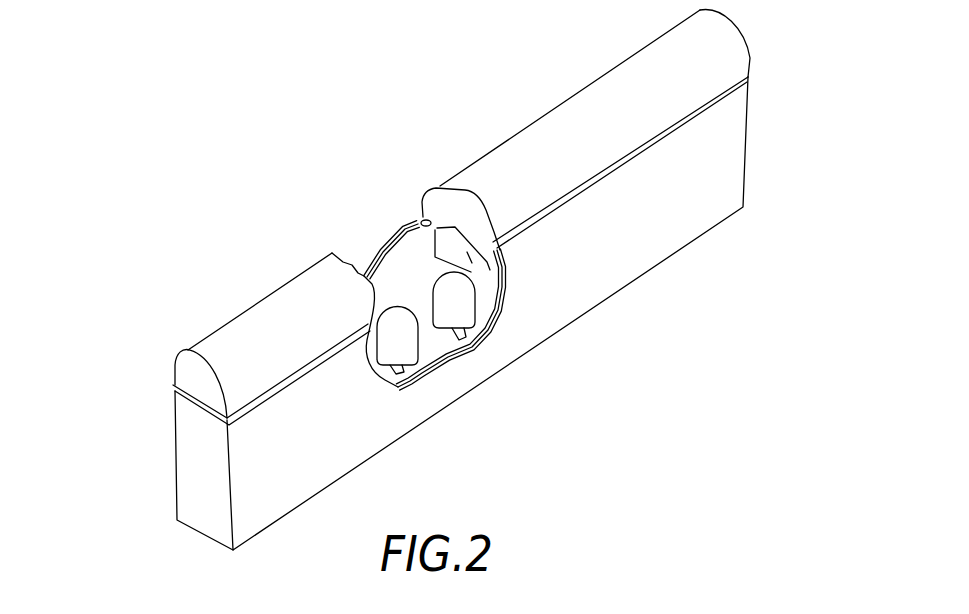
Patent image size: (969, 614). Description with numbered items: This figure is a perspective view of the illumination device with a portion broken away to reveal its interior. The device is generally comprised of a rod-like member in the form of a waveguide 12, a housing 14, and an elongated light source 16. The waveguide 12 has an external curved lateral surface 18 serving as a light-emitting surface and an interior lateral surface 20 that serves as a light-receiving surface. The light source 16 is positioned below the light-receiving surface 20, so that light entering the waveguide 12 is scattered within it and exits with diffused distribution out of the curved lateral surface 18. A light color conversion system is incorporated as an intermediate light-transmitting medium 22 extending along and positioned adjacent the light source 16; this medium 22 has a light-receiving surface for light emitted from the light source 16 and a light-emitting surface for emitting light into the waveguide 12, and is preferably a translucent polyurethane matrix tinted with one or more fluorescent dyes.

The waveguide 12 is at (185, 370).
The housing 14 is at (250, 530).
The elongated light source 16 is at (455, 308).
The external curved lateral surface 18 is at (265, 305).
The interior lateral surface 20 is at (420, 223).
The intermediate light-transmitting medium 22 is at (490, 295).